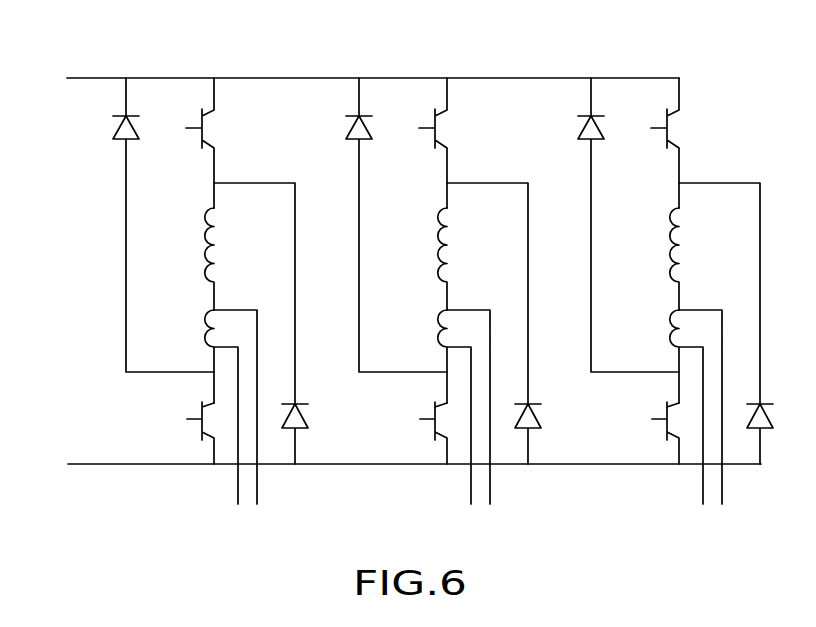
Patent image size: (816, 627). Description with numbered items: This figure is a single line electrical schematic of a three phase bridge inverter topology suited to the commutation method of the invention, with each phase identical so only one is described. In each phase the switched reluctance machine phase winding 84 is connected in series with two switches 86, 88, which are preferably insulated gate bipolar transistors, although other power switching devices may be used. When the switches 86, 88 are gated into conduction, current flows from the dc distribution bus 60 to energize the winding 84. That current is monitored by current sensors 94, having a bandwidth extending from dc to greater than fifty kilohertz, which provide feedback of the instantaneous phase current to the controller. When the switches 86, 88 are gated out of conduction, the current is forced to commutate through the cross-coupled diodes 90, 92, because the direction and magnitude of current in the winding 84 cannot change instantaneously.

The dc distribution bus 60 is at (87, 78).
The diode 90 is at (114, 128).
The switch 86 is at (202, 137).
The phase winding 84 is at (203, 260).
The current sensor 94 is at (203, 327).
The switch 88 is at (202, 411).
The diode 92 is at (307, 420).